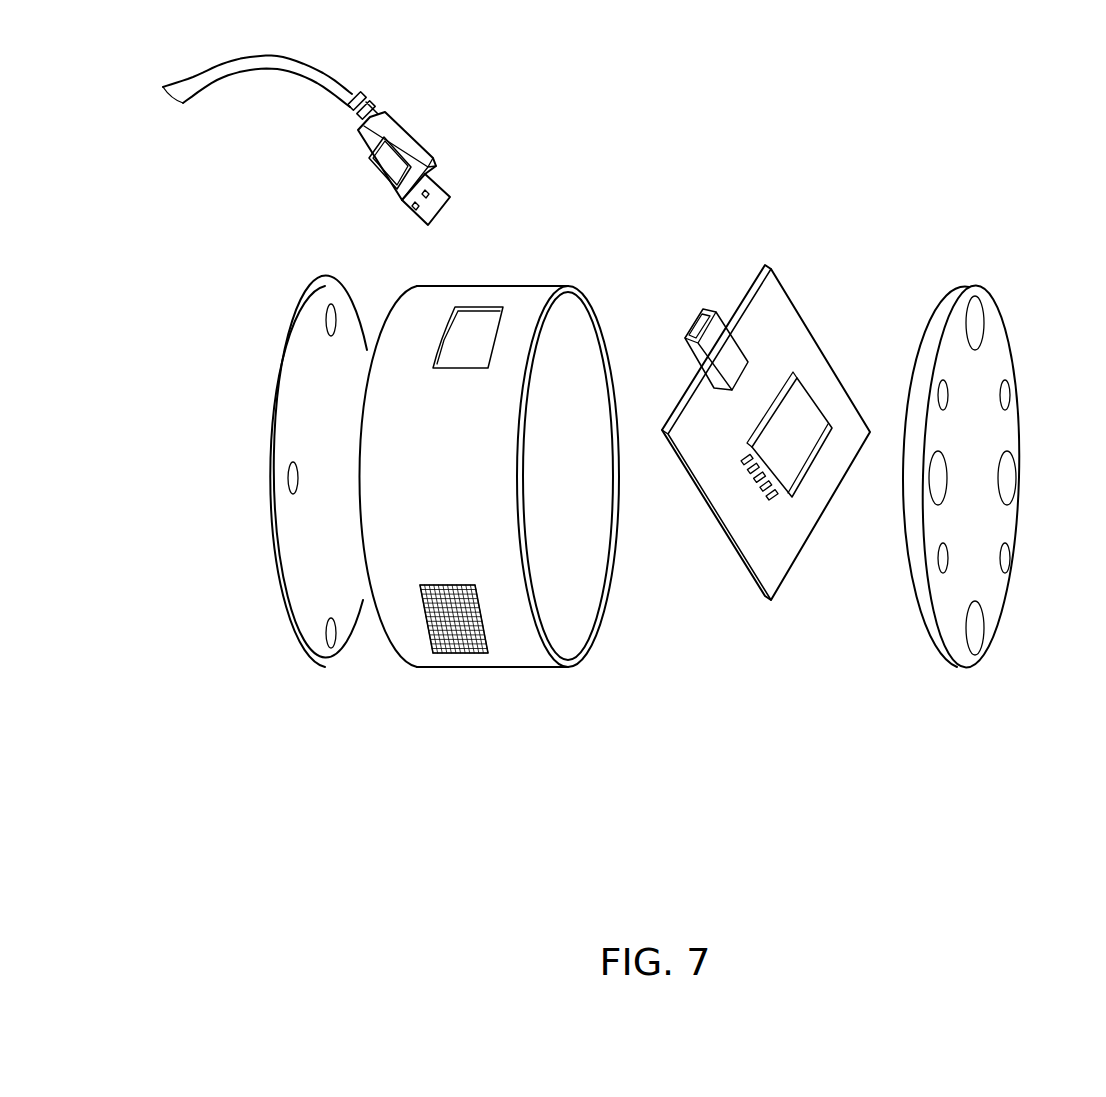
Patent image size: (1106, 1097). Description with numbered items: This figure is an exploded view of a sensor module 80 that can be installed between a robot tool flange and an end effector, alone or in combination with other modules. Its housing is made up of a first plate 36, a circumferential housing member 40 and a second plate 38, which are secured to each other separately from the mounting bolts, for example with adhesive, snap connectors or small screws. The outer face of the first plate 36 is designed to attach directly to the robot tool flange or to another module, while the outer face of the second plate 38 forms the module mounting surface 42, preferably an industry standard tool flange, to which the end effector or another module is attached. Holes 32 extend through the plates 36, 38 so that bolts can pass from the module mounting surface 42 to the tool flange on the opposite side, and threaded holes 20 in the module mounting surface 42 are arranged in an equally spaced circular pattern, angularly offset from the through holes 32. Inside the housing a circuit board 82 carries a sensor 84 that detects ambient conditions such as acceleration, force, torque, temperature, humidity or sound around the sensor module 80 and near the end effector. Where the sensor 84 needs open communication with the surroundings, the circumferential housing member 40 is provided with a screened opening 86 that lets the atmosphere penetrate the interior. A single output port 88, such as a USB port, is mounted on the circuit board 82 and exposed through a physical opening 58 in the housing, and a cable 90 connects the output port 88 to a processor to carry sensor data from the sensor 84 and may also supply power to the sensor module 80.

The threaded holes 20 is at (1010, 392).
The holes 32 is at (335, 304).
The first plate 36 is at (272, 420).
The second plate 38 is at (1020, 432).
The circumferential housing member 40 is at (456, 669).
The module mounting surface 42 is at (953, 597).
The physical opening 58 is at (470, 307).
The sensor module 80 is at (789, 142).
The circuit board 82 is at (792, 300).
The sensor 84 is at (803, 375).
The screened opening 86 is at (452, 584).
The output port 88 is at (728, 308).
The cable 90 is at (396, 112).